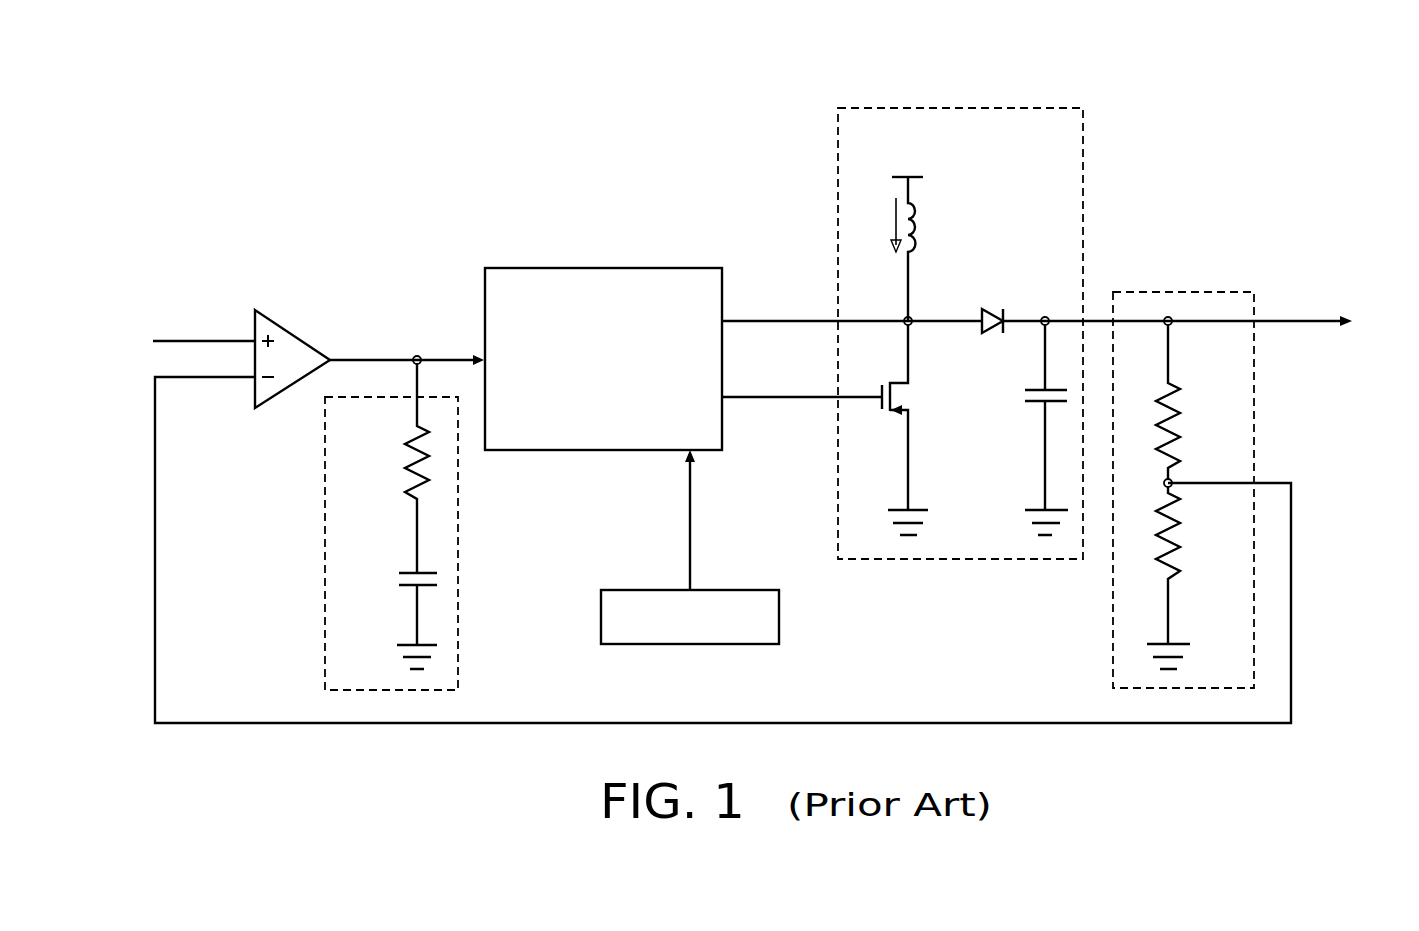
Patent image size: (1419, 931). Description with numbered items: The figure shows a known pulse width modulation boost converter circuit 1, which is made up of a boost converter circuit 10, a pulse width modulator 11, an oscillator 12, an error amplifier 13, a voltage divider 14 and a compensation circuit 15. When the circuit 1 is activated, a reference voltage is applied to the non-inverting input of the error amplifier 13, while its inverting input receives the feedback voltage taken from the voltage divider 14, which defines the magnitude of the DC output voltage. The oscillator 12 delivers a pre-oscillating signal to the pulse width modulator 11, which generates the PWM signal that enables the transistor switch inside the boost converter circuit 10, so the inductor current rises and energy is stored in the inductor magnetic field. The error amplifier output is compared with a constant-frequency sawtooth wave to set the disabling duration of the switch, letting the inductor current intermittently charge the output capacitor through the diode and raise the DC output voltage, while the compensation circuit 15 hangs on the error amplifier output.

The pulse width modulation boost converter circuit 1 is at (316, 150).
The boost converter circuit 10 is at (960, 108).
The pulse width modulator 11 is at (690, 268).
The oscillator 12 is at (779, 617).
The error amplifier 13 is at (292, 335).
The voltage divider 14 is at (1185, 292).
The compensation circuit 15 is at (324, 543).